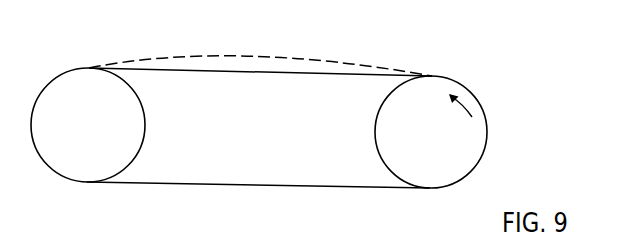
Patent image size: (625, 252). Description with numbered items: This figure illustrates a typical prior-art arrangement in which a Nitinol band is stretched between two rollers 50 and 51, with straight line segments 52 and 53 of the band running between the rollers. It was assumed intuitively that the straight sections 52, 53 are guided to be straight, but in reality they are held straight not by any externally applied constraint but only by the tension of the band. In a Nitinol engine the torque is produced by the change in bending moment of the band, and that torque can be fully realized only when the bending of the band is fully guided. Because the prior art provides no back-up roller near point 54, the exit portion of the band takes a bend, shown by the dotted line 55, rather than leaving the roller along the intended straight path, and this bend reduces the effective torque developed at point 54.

The roller 50 is at (88, 125).
The roller 51 is at (431, 132).
The straight line segment 52 is at (260, 88).
The straight line segment 53 is at (258, 199).
The point 54 is at (443, 77).
The dotted line 55 is at (261, 57).